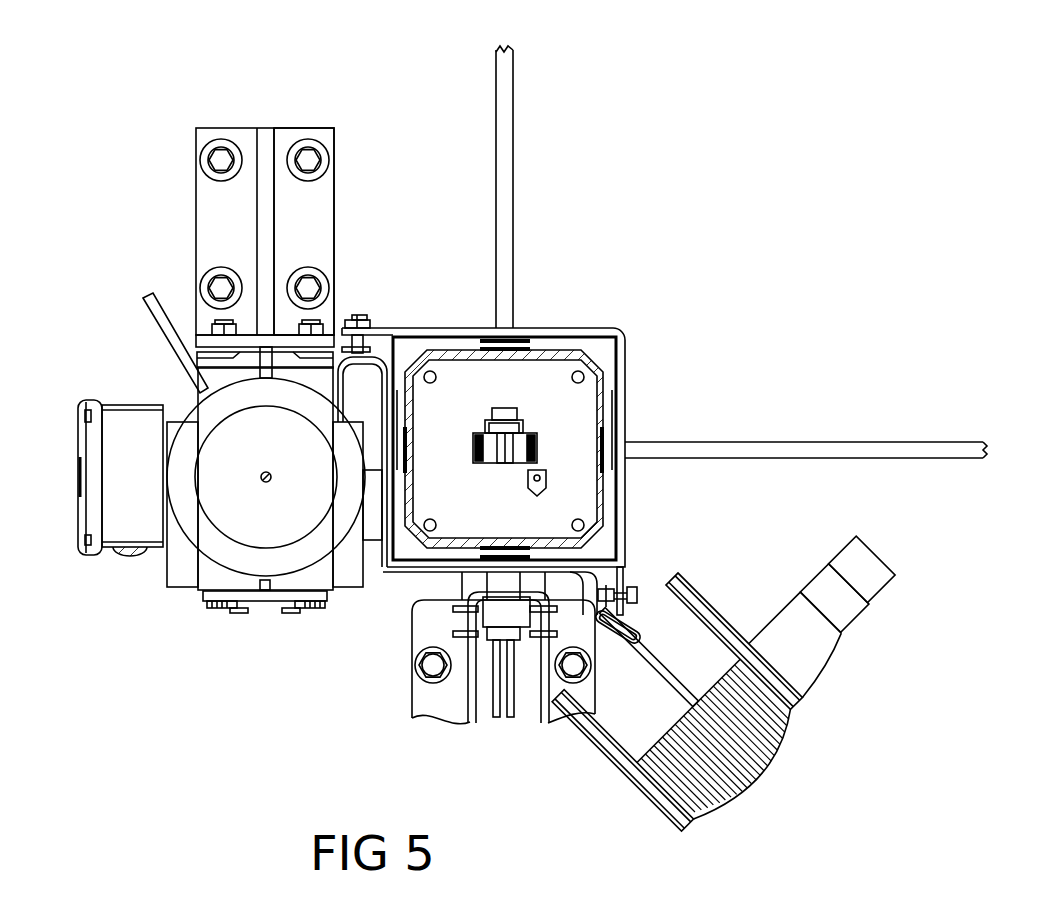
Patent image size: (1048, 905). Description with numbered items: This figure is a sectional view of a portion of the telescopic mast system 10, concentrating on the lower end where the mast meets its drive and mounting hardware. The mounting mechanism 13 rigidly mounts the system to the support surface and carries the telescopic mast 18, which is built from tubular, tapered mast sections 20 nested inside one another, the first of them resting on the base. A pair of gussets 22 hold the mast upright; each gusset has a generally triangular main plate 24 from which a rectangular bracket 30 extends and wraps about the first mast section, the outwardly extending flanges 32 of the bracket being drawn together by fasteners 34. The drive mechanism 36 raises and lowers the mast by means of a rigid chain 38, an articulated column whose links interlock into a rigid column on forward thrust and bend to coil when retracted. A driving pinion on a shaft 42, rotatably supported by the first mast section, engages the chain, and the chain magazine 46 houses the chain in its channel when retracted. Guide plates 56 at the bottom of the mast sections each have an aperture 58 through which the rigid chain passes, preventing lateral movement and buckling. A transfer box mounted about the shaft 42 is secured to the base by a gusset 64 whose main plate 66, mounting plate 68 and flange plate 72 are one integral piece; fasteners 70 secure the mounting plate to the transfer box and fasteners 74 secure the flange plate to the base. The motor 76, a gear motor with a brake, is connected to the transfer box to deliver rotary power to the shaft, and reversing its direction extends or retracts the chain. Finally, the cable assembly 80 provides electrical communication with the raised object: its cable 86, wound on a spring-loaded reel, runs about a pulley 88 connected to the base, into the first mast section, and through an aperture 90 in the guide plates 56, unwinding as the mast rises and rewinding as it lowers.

The telescopic mast system 10 is at (693, 303).
The mounting mechanism 13 is at (803, 440).
The telescopic mast 18 is at (520, 408).
The telescopic mast sections 20 is at (612, 423).
The gussets 22 is at (729, 260).
The main plate 24 is at (509, 180).
The bracket 30 is at (622, 353).
The flanges 32 is at (376, 356).
The fasteners 34 is at (360, 322).
The drive mechanism 36 is at (230, 522).
The rigid chain 38 is at (517, 428).
The shaft 42 is at (373, 522).
The chain magazine 46 is at (413, 723).
The guide plates 56 is at (570, 400).
The aperture 58 is at (483, 428).
The gusset 64 is at (261, 232).
The main plate 66 is at (262, 205).
The mounting plate 68 is at (207, 345).
The fasteners 70 is at (302, 308).
The flange plate 72 is at (308, 208).
The fasteners 74 is at (222, 162).
The motor 76 is at (282, 558).
The cable assembly 80 is at (730, 644).
The cable 86 is at (658, 655).
The pulley 88 is at (610, 637).
The aperture 90 is at (540, 480).